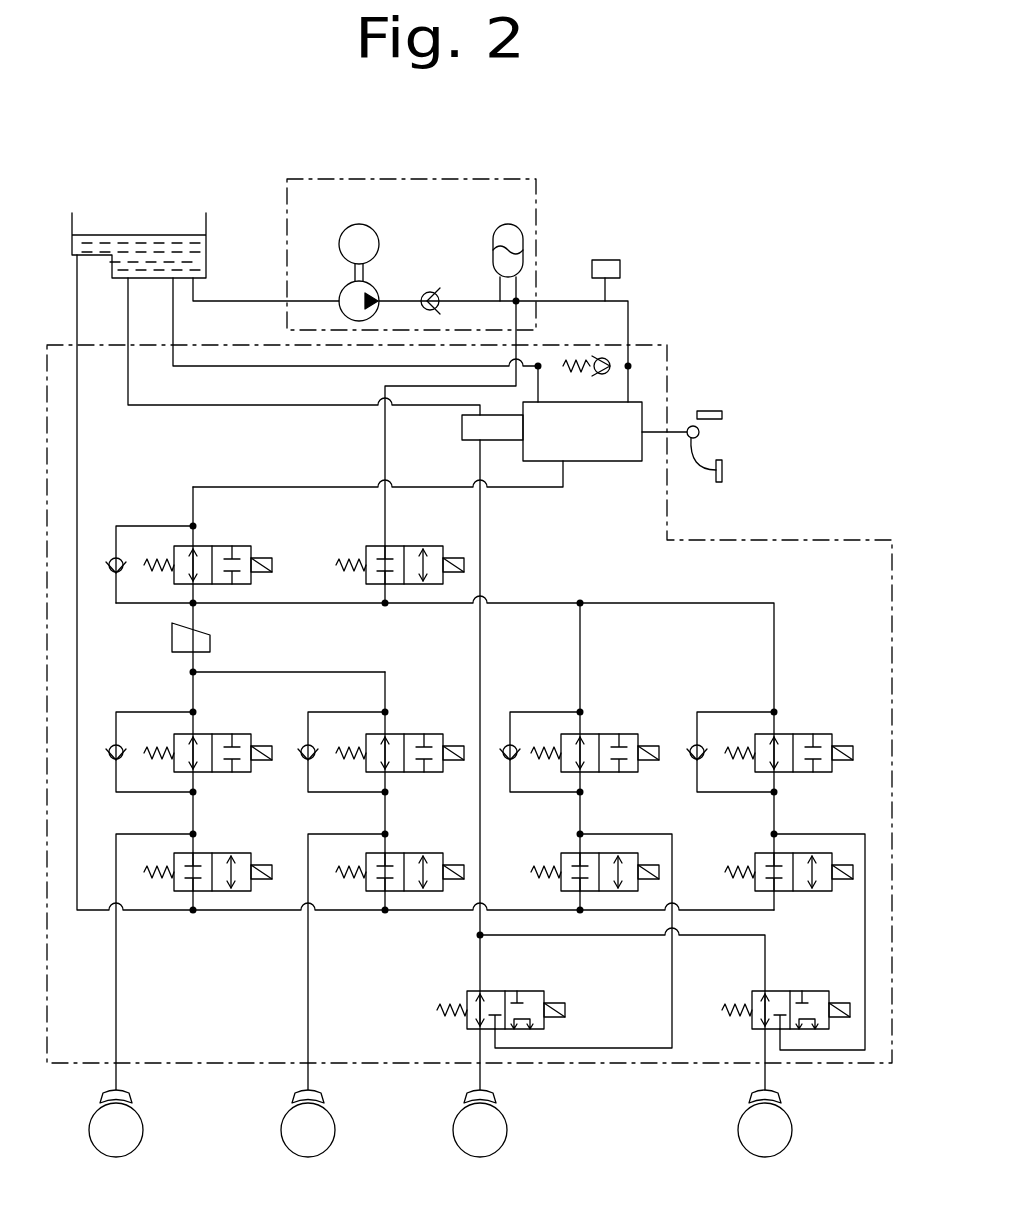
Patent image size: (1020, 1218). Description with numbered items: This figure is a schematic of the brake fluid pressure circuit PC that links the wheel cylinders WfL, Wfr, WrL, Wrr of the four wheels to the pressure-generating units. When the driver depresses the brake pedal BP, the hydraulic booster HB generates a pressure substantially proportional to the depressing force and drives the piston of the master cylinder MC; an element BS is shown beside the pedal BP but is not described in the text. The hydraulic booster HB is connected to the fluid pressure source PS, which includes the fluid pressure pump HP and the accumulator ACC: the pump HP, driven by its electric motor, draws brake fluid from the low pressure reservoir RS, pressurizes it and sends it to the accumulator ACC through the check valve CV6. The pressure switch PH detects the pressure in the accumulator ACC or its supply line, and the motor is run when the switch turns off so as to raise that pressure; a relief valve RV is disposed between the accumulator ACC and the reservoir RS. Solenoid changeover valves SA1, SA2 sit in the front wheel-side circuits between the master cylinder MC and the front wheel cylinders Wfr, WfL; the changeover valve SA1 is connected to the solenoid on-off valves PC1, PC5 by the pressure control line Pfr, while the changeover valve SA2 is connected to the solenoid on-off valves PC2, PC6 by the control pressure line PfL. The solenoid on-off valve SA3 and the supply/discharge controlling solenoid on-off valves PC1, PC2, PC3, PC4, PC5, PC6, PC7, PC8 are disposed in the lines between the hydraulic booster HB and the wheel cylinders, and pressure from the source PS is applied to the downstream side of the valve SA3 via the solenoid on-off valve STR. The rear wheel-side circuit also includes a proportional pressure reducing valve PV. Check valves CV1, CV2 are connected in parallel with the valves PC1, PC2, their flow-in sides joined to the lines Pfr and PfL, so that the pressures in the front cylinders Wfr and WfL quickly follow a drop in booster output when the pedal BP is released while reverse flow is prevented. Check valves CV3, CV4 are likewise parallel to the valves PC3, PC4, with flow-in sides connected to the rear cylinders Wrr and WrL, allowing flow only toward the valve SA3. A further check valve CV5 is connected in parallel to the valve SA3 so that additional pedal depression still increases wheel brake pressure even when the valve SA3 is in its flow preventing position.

The low pressure reservoir RS is at (206, 225).
The fluid pressure source PS is at (536, 235).
The fluid pressure pump HP is at (342, 292).
The check valve CV6 is at (428, 294).
The accumulator ACC is at (507, 224).
The pressure switch PH is at (622, 270).
The relief valve RV is at (573, 361).
The hydraulic booster HB is at (582, 431).
The master cylinder MC is at (466, 432).
The brake switch BS is at (724, 415).
The brake pedal BP is at (724, 468).
The brake fluid pressure circuit PC is at (790, 538).
The check valve CV5 is at (114, 556).
The solenoid on-off valve SA3 is at (198, 545).
The solenoid on-off valve STR is at (388, 545).
The proportional pressure reducing valve PV is at (210, 641).
The check valve CV4 is at (114, 744).
The solenoid on-off valve PC4 is at (196, 733).
The check valve CV3 is at (307, 744).
The solenoid on-off valve PC3 is at (388, 733).
The check valve CV2 is at (509, 744).
The solenoid on-off valve PC2 is at (582, 733).
The check valve CV1 is at (696, 744).
The solenoid on-off valve PC1 is at (776, 733).
The solenoid on-off valve PC8 is at (196, 852).
The solenoid on-off valve PC7 is at (388, 852).
The solenoid on-off valve PC6 is at (582, 852).
The solenoid on-off valve PC5 is at (776, 852).
The solenoid changeover valve SA2 is at (534, 985).
The solenoid changeover valve SA1 is at (768, 991).
The control pressure line PfL is at (640, 1050).
The pressure control line Pfr is at (845, 1052).
The wheel cylinder WrL is at (131, 1100).
The wheel cylinder Wrr is at (323, 1100).
The wheel cylinder WfL is at (495, 1100).
The wheel cylinder Wfr is at (780, 1100).